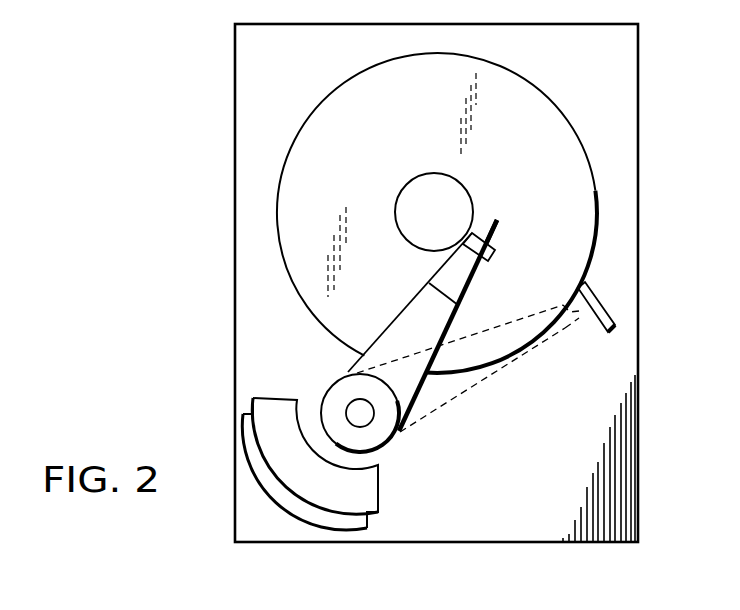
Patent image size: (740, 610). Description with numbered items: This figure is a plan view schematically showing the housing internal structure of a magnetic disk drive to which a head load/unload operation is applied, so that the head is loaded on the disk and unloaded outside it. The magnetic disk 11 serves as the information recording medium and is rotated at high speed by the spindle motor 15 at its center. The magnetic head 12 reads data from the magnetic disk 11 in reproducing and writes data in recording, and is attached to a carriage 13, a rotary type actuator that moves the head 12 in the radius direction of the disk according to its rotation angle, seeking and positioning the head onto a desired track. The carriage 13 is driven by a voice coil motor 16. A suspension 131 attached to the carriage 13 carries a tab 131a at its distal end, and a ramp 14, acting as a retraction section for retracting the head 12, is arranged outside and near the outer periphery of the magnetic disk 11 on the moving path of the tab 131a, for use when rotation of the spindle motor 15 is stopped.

The magnetic disk 11 is at (553, 106).
The magnetic head 12 is at (496, 252).
The carriage 13 is at (378, 333).
The suspension 131 is at (445, 278).
The tab 131a is at (493, 226).
The ramp 14 is at (601, 334).
The spindle motor 15 is at (415, 188).
The voice coil motor 16 is at (313, 531).